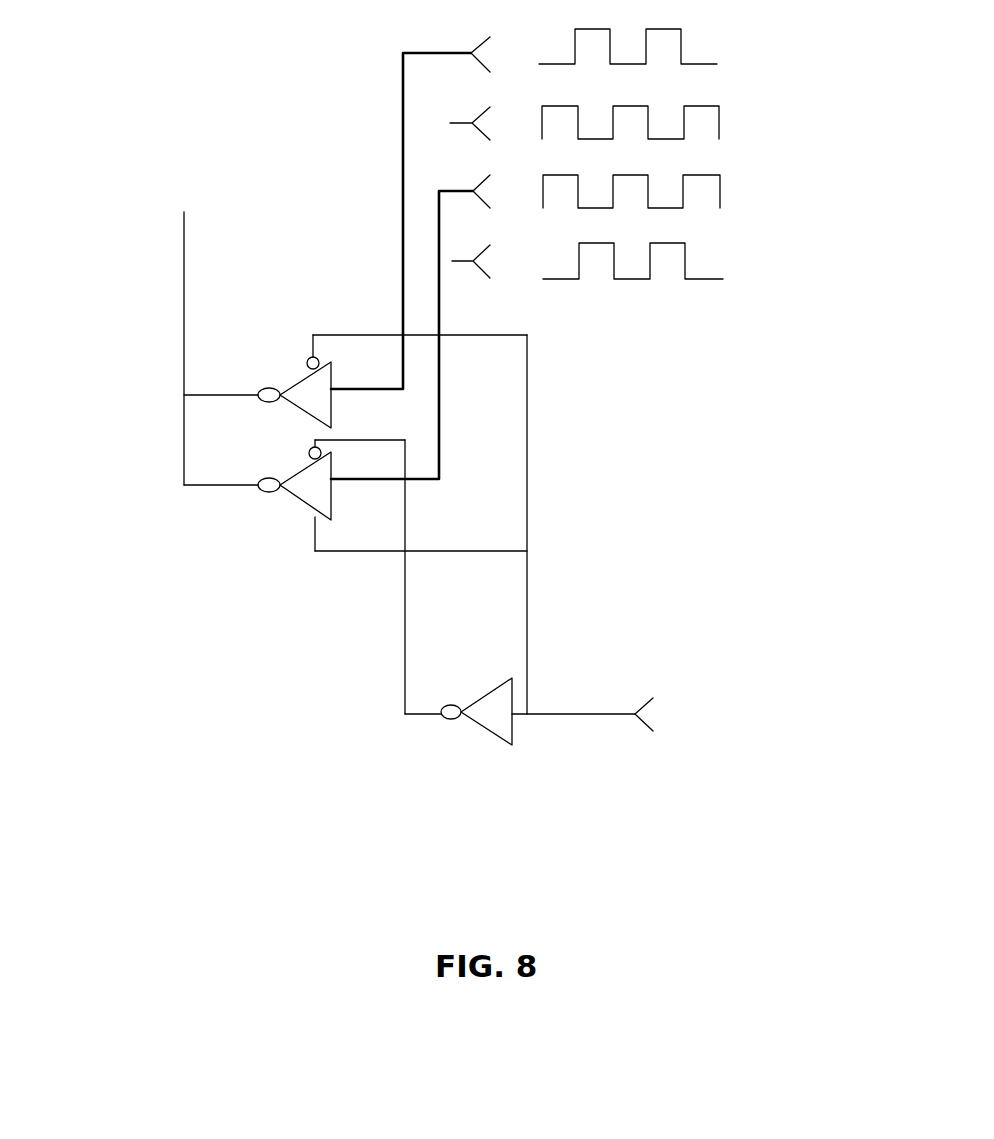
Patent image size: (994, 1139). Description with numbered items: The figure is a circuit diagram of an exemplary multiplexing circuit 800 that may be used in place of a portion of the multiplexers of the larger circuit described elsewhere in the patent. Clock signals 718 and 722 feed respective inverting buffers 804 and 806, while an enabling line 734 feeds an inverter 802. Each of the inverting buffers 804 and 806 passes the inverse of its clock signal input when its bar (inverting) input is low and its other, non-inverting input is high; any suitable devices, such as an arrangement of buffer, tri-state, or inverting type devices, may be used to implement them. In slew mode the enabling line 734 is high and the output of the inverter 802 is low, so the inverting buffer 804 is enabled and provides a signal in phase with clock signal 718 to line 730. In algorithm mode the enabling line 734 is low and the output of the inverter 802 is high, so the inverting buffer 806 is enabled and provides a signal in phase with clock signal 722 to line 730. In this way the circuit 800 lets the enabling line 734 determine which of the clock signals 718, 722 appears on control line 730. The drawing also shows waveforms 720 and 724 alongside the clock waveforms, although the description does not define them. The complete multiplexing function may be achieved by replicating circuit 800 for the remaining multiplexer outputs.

The clock signal 718 is at (708, 33).
The second output waveform 720 is at (728, 127).
The clock signal 722 is at (716, 192).
The fourth output waveform 724 is at (716, 259).
The control line 730 is at (184, 258).
The enabling line 734 is at (643, 708).
The multiplexing circuit 800 is at (144, 426).
The inverter 802 is at (472, 703).
The inverting buffer 804 is at (308, 498).
The inverting buffer 806 is at (295, 378).